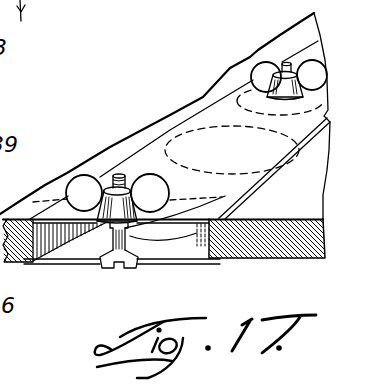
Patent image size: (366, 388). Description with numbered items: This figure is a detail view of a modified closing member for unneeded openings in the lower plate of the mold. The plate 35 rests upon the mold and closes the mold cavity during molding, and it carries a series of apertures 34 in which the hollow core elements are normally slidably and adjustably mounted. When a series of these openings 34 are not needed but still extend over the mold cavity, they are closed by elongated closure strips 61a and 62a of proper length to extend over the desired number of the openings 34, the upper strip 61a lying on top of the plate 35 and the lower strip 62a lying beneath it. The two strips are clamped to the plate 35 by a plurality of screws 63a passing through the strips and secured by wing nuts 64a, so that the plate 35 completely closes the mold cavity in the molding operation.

The apertures 34 is at (215, 104).
The plate 35 is at (260, 242).
The elongated closure strip 61a is at (246, 195).
The elongated closure strip 62a is at (55, 266).
The screws 63a is at (117, 174).
The wing nuts 64a is at (80, 190).